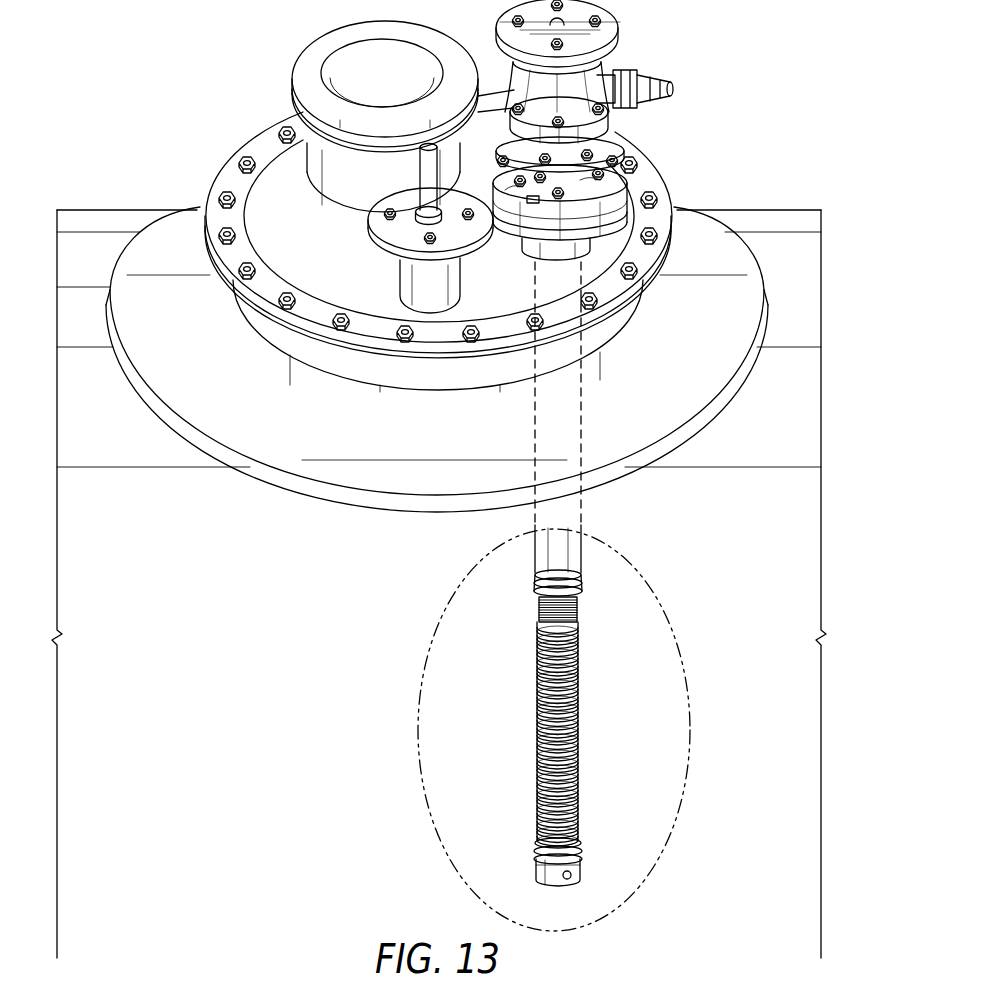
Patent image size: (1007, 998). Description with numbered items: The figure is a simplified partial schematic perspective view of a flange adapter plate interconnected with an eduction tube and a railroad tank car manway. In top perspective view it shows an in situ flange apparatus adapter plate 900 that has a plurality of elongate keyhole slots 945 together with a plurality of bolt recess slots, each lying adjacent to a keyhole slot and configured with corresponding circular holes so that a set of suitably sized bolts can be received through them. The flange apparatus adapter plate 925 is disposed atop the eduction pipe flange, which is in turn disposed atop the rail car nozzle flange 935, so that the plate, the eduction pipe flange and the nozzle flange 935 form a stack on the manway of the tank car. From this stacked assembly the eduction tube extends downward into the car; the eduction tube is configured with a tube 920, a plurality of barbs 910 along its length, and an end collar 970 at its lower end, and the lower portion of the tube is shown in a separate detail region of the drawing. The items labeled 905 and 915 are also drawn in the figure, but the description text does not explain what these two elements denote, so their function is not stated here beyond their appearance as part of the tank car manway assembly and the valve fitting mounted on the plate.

The flange apparatus adapter plate 900 is at (624, 486).
The tank top plate 905 is at (740, 212).
The barbs 910 is at (572, 737).
The outlet port 915 is at (627, 65).
The tube 920 is at (538, 620).
The flange apparatus adapter plate 925 is at (630, 220).
The rail car nozzle flange 935 is at (627, 187).
The elongate keyhole slots 945 is at (620, 148).
The end collar 970 is at (535, 867).